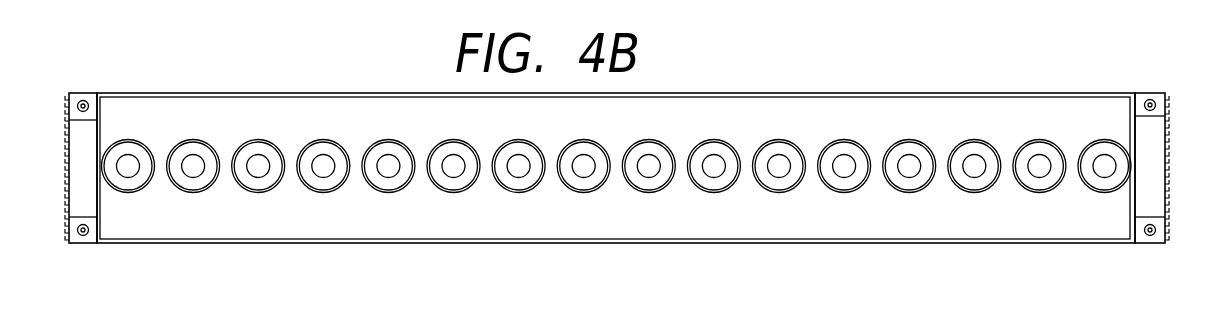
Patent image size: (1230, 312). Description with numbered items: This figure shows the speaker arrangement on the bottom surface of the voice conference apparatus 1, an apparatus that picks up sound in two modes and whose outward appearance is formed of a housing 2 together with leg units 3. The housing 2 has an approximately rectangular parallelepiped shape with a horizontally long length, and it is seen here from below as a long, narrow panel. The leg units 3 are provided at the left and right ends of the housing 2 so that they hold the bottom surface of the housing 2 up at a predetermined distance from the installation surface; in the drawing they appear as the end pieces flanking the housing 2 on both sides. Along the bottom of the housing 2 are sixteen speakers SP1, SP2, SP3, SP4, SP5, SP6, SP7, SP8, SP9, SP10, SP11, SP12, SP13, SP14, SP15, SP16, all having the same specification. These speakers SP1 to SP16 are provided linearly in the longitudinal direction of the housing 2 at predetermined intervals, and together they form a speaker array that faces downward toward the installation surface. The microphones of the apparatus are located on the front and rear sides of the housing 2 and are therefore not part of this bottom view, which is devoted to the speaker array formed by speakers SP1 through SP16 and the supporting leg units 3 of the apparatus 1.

The voice conference apparatus 1 is at (1125, 74).
The housing 2 is at (1057, 109).
The leg units 3 is at (76, 192).
The speaker SP1 is at (130, 193).
The speaker SP2 is at (195, 193).
The speaker SP3 is at (260, 193).
The speaker SP4 is at (325, 193).
The speaker SP5 is at (390, 193).
The speaker SP6 is at (456, 193).
The speaker SP7 is at (521, 193).
The speaker SP8 is at (586, 193).
The speaker SP9 is at (651, 193).
The speaker SP10 is at (716, 193).
The speaker SP11 is at (781, 193).
The speaker SP12 is at (846, 193).
The speaker SP13 is at (911, 193).
The speaker SP14 is at (976, 193).
The speaker SP15 is at (1041, 193).
The speaker SP16 is at (1106, 193).